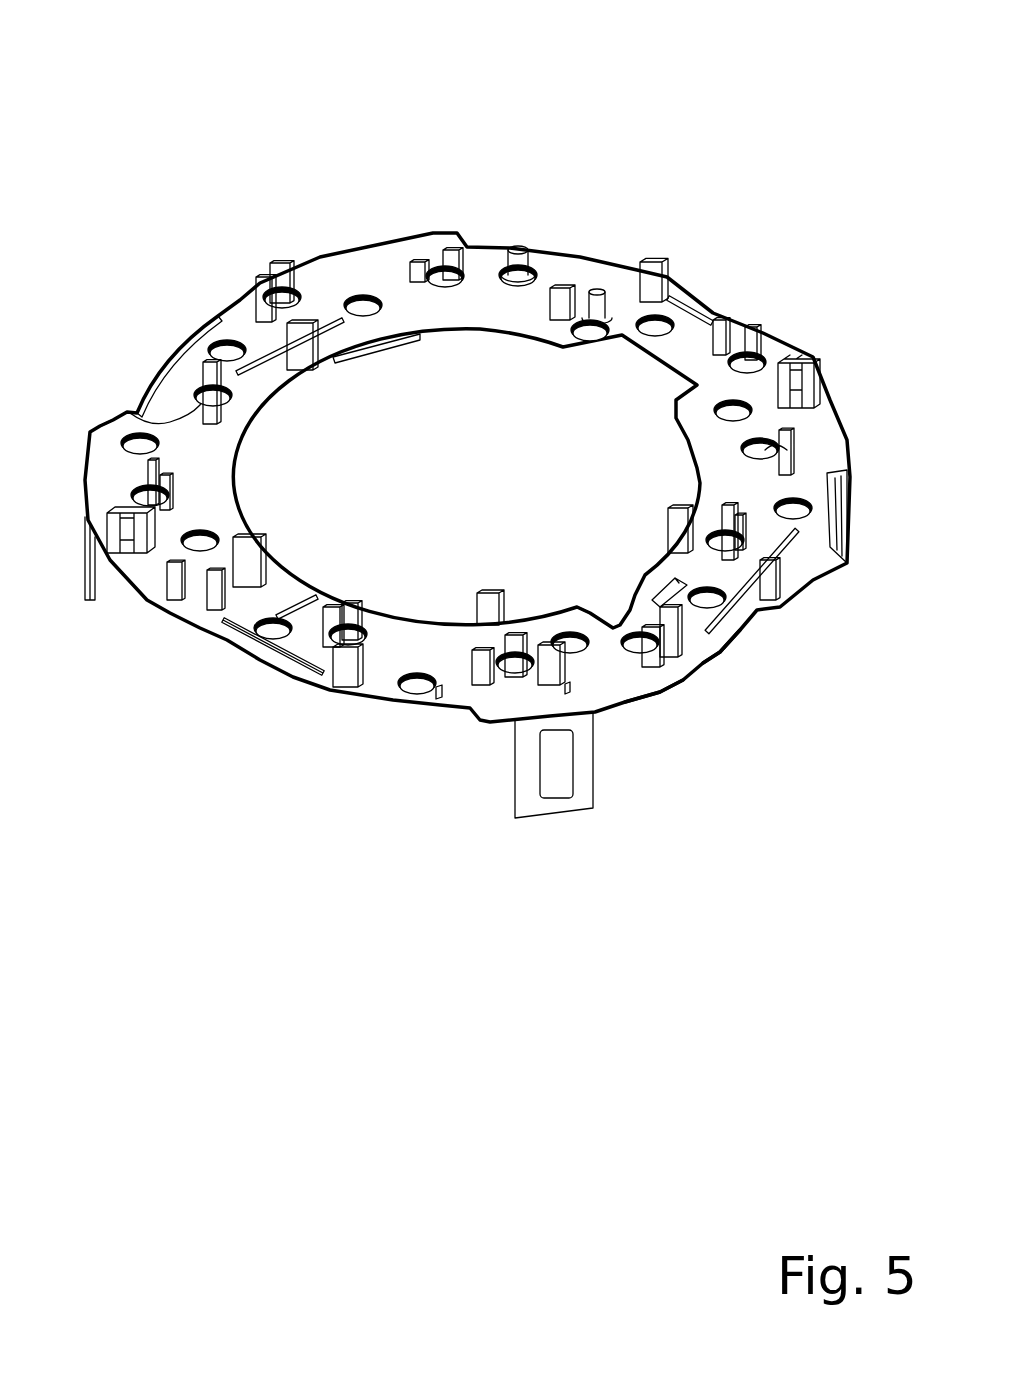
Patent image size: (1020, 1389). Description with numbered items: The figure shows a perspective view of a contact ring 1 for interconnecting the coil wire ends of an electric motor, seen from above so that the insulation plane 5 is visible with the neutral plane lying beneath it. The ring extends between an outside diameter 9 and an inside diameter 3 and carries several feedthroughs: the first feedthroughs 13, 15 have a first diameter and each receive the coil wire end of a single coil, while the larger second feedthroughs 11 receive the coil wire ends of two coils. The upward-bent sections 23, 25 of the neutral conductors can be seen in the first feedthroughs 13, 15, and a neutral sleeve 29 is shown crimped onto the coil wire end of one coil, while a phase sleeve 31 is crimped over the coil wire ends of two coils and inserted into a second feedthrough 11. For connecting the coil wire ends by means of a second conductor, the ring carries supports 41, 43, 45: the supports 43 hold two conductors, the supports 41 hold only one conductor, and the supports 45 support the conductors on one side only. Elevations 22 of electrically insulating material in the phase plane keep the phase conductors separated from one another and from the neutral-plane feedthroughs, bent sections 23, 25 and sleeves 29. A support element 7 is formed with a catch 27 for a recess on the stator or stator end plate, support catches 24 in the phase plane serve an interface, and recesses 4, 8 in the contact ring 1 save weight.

The contact ring 1 is at (510, 55).
The inside diameter 3 is at (240, 468).
The recess 4 is at (605, 603).
The insulation plane 5 is at (622, 692).
The support element 7 is at (578, 805).
The recess 8 is at (737, 642).
The outside diameter 9 is at (657, 700).
The second feedthrough 11 is at (363, 303).
The first feedthrough 13 is at (133, 415).
The first feedthrough 15 is at (217, 400).
The elevation 22 is at (705, 287).
The upward-bent section 23 is at (443, 247).
The support catch 24 is at (836, 570).
The upward-bent section 25 is at (265, 300).
The catch 27 is at (95, 600).
The neutral sleeve 29 is at (593, 300).
The phase sleeve 31 is at (513, 250).
The support 41 is at (640, 265).
The support 43 is at (790, 355).
The support 45 is at (670, 530).